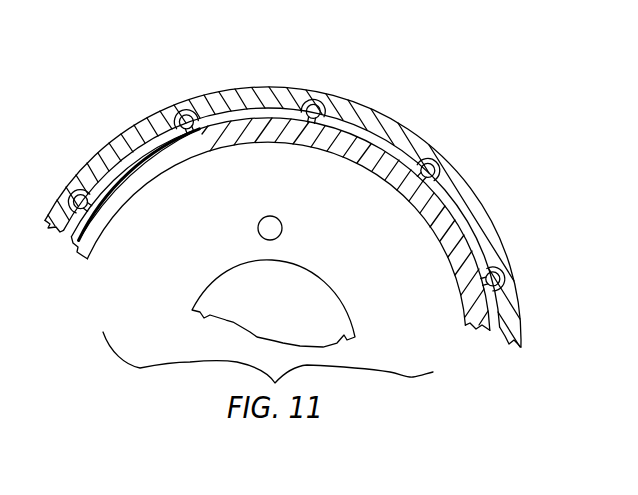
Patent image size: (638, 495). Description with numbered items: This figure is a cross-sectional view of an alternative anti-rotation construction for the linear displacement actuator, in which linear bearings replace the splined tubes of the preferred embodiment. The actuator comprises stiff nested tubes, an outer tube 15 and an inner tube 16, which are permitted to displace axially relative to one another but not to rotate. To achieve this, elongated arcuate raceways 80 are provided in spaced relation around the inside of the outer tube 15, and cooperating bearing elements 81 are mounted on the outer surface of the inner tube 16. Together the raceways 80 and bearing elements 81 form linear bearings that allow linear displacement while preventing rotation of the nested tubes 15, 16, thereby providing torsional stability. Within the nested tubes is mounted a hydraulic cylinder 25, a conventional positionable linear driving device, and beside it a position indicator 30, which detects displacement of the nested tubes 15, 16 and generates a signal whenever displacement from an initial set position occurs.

The outer tube 15 is at (215, 102).
The inner tube 16 is at (213, 130).
The raceways 80 is at (76, 195).
The bearing elements 81 is at (92, 200).
The position indicator 30 is at (280, 220).
The hydraulic cylinder 25 is at (312, 283).